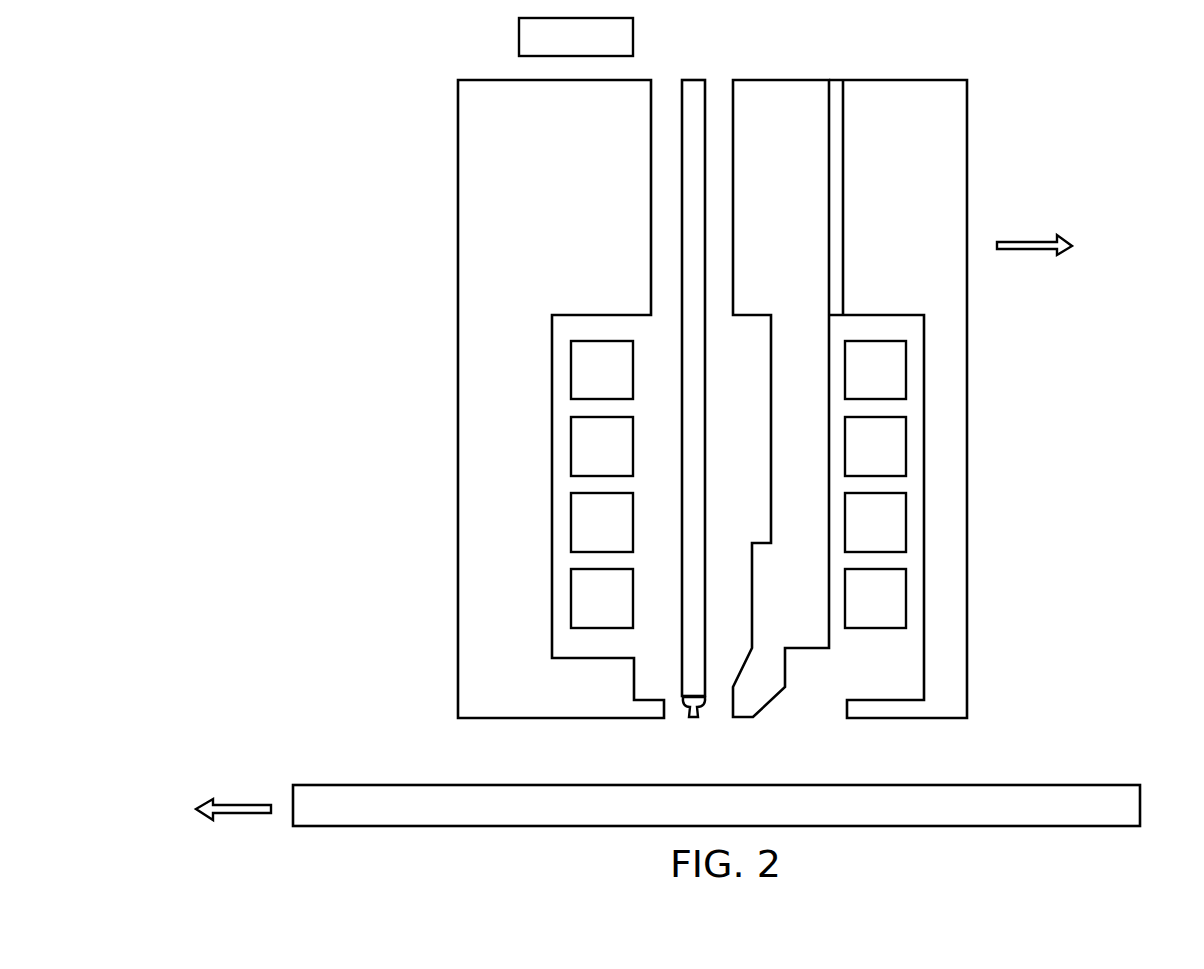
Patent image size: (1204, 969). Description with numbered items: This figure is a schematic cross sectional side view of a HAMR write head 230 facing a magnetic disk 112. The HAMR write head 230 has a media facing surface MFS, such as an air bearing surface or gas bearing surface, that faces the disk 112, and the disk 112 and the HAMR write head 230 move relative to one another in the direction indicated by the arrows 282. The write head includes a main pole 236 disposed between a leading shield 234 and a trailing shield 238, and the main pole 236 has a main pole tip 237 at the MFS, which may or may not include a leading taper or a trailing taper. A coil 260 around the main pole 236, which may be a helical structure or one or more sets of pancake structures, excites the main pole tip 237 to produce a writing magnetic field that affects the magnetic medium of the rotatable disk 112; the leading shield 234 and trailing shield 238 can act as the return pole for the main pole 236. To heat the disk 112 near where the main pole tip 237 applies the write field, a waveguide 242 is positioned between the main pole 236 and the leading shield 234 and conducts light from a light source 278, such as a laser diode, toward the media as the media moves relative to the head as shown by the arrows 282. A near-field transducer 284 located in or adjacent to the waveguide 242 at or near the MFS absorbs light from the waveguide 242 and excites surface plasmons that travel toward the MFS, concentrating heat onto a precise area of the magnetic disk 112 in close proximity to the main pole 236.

The HAMR write head 230 is at (292, 170).
The leading shield 234 is at (517, 477).
The main pole 236 is at (817, 472).
The main pole tip 237 is at (777, 691).
The trailing shield 238 is at (963, 472).
The waveguide 242 is at (690, 193).
The coil 260 is at (618, 381).
The light source 278 is at (690, 72).
The arrows 282 is at (242, 805).
The near-field transducer 284 is at (685, 698).
The magnetic disk 112 is at (737, 817).
The media facing surface MFS is at (909, 724).